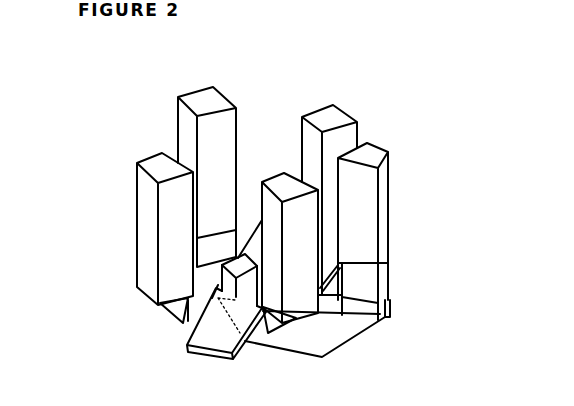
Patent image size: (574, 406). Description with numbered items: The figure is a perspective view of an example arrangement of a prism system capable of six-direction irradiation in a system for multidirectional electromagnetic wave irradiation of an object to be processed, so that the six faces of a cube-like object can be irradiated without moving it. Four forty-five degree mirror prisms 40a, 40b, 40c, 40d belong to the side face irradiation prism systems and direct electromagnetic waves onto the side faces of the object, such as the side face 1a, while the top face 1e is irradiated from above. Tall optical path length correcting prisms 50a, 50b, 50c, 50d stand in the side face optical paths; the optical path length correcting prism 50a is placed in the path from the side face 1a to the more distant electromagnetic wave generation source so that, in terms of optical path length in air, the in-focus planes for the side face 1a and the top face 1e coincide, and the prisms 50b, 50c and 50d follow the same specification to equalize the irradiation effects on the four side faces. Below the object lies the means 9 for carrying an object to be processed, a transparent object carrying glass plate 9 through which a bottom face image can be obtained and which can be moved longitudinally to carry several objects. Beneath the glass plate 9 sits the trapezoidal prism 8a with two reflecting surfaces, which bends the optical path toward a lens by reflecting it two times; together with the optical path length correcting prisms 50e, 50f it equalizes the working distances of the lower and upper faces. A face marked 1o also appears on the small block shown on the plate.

The trapezoidal prism 8a is at (342, 337).
The means for carrying an object to be processed 9 is at (210, 336).
The side face 1a is at (229, 278).
The top face 1e is at (239, 266).
The block front face 1o is at (247, 286).
The 45° mirror prism 40a is at (180, 315).
The 45° mirror prism 40b is at (390, 263).
The 45° mirror prism 40c is at (272, 333).
The 45° mirror prism 40d is at (224, 247).
The optical path length correcting prism 50a is at (147, 242).
The optical path length correcting prism 50b is at (325, 113).
The optical path length correcting prism 50c is at (297, 180).
The optical path length correcting prism 50d is at (217, 97).
The optical path length correcting prism 50e is at (380, 142).
The optical path length correcting prism 50f is at (387, 312).